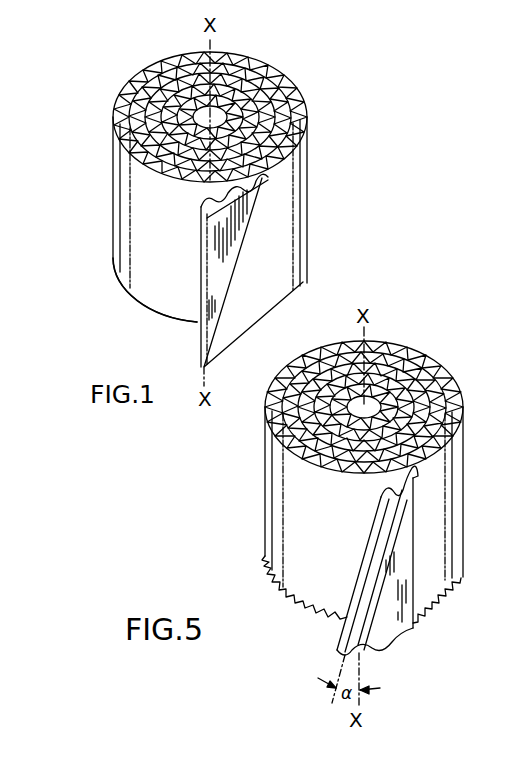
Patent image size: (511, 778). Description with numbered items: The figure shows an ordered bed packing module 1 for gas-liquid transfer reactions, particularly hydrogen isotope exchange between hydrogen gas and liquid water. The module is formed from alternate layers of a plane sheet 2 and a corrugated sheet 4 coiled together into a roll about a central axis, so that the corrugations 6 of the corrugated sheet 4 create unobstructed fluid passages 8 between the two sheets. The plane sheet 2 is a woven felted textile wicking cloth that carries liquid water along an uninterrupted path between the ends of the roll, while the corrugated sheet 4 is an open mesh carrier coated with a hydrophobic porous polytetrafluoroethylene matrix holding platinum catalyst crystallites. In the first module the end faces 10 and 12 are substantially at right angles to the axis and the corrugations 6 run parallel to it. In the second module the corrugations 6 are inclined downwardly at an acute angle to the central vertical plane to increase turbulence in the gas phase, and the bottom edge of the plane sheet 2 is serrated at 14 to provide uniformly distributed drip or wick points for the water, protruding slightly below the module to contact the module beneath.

In FIG. 1, the ordered bed packing module 1 is at (155, 262).
In FIG. 5, the ordered bed packing module 1 is at (307, 555).
In FIG. 1, the plane sheet 2 is at (248, 328).
In FIG. 5, the plane sheet 2 is at (461, 582).
In FIG. 1, the corrugated sheet 4 is at (227, 232).
In FIG. 5, the corrugated sheet 4 is at (393, 515).
In FIG. 1, the corrugations 6 is at (268, 177).
In FIG. 5, the corrugations 6 is at (413, 473).
In FIG. 1, the unobstructed fluid passages 8 is at (304, 108).
In FIG. 1, the end face 10 is at (178, 322).
In FIG. 5, the end face 10 is at (300, 612).
In FIG. 1, the end face 12 is at (117, 108).
In FIG. 5, the end face 12 is at (266, 415).
In FIG. 5, the serrated bottom edge 14 is at (437, 632).